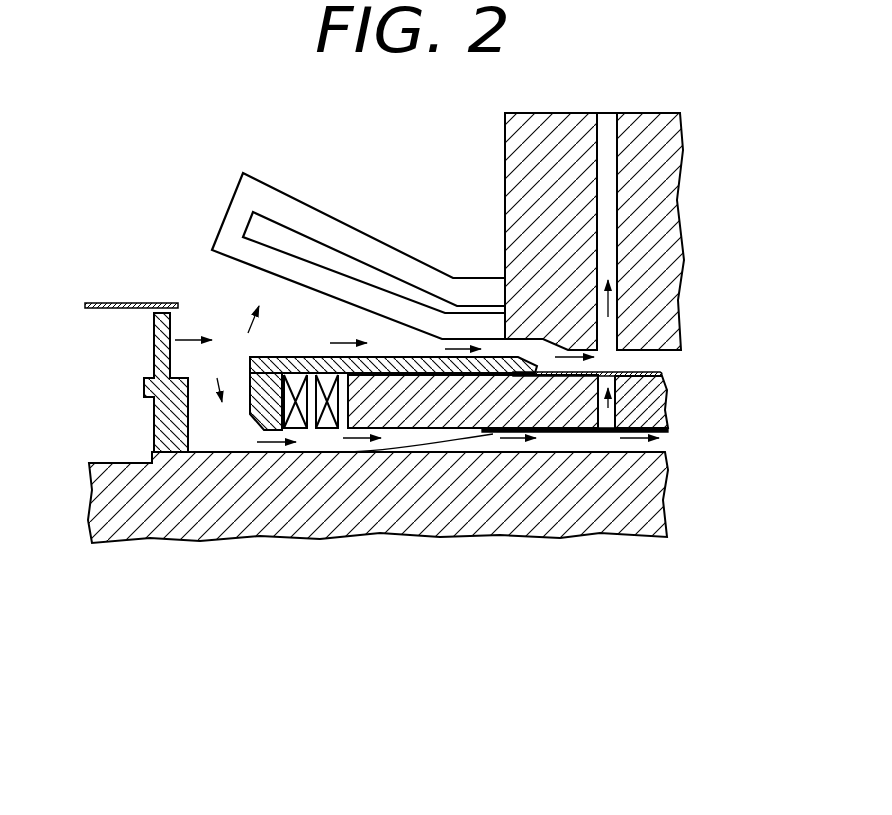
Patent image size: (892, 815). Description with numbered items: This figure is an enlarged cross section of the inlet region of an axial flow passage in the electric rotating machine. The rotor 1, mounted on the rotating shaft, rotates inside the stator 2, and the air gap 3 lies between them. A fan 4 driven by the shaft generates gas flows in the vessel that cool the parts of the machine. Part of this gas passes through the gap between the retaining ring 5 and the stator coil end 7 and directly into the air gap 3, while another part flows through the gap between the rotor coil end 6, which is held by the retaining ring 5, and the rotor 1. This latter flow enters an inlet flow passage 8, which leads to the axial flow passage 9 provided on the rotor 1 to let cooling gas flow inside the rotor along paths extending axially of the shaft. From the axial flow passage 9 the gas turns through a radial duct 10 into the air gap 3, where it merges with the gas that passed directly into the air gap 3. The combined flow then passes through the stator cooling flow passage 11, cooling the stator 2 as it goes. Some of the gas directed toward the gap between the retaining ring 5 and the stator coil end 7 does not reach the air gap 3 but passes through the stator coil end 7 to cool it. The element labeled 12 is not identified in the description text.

The rotor 1 is at (365, 512).
The stator 2 is at (550, 180).
The air gap 3 is at (633, 358).
The fan 4 is at (152, 353).
The retaining ring 5 is at (300, 363).
The rotor coil end 6 is at (295, 422).
The stator coil end 7 is at (327, 216).
The inlet flow passage 8 is at (438, 445).
The axial flow passage 9 is at (572, 445).
The radial duct 10 is at (607, 383).
The stator cooling flow passage 11 is at (607, 220).
The thin bar 12 is at (202, 340).